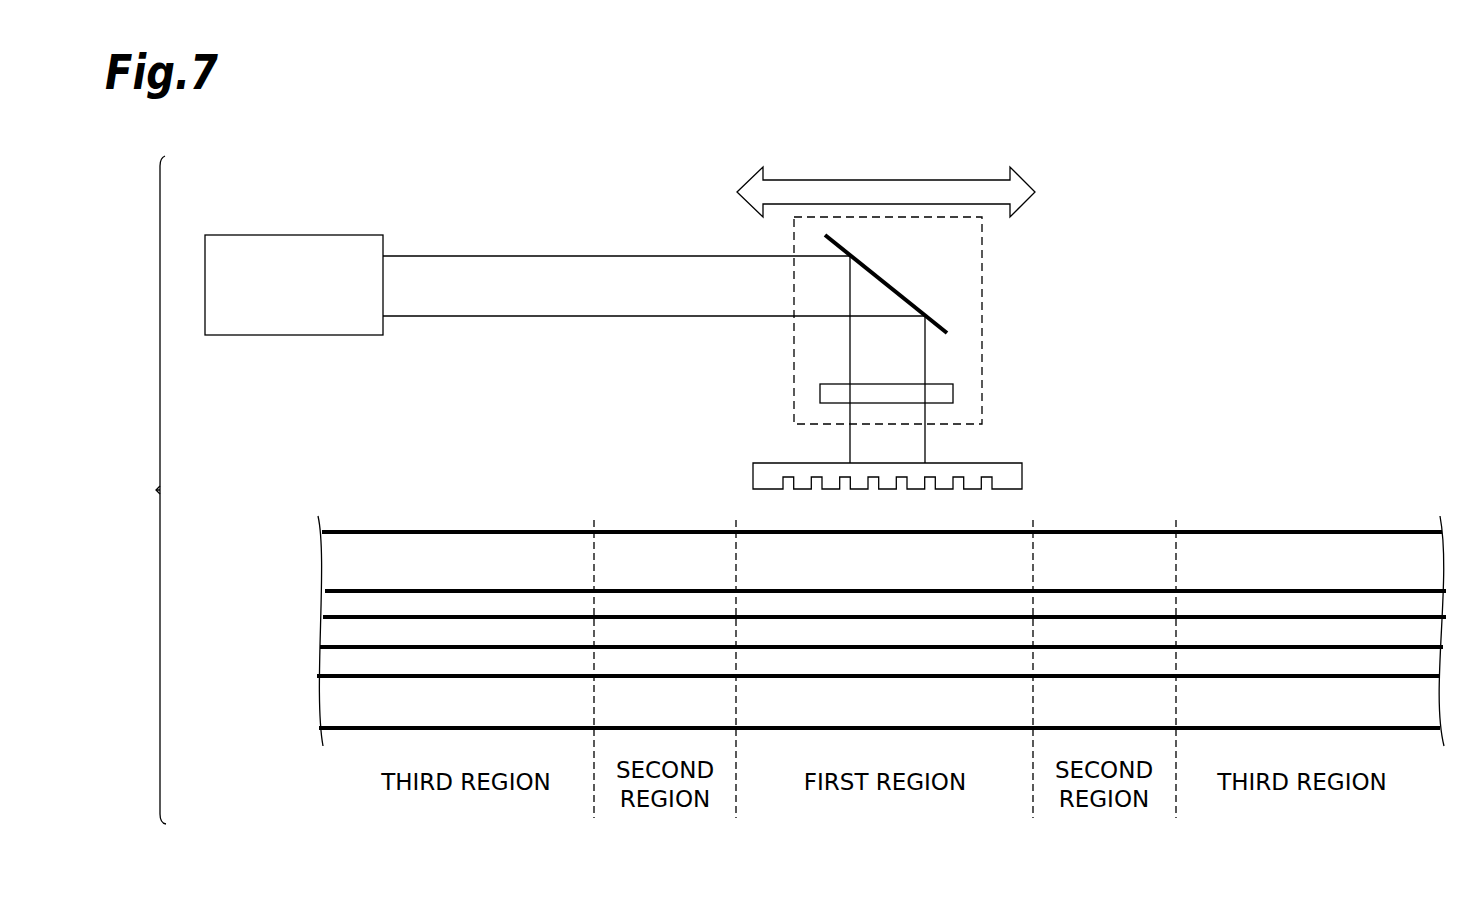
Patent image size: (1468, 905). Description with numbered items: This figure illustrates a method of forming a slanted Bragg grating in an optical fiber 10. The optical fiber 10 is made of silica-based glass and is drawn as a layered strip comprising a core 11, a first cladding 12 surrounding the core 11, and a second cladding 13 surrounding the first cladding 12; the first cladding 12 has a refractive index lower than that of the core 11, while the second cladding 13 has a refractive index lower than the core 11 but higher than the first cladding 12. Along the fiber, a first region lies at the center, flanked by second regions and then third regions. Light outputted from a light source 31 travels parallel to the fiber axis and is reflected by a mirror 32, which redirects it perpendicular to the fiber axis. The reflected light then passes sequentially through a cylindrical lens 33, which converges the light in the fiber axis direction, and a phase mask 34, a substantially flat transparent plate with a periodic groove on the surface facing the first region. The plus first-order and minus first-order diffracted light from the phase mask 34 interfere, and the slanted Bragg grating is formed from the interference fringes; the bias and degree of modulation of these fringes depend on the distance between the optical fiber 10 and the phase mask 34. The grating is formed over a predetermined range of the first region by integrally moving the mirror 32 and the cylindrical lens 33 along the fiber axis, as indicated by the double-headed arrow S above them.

The optical fiber 10 is at (881, 590).
The core 11 is at (360, 479).
The first cladding 12 is at (482, 658).
The second cladding 13 is at (404, 702).
The light source 31 is at (338, 235).
The mirror 32 is at (932, 317).
The cylindrical lens 33 is at (937, 382).
The phase mask 34 is at (1022, 472).
The scanning direction S is at (951, 178).